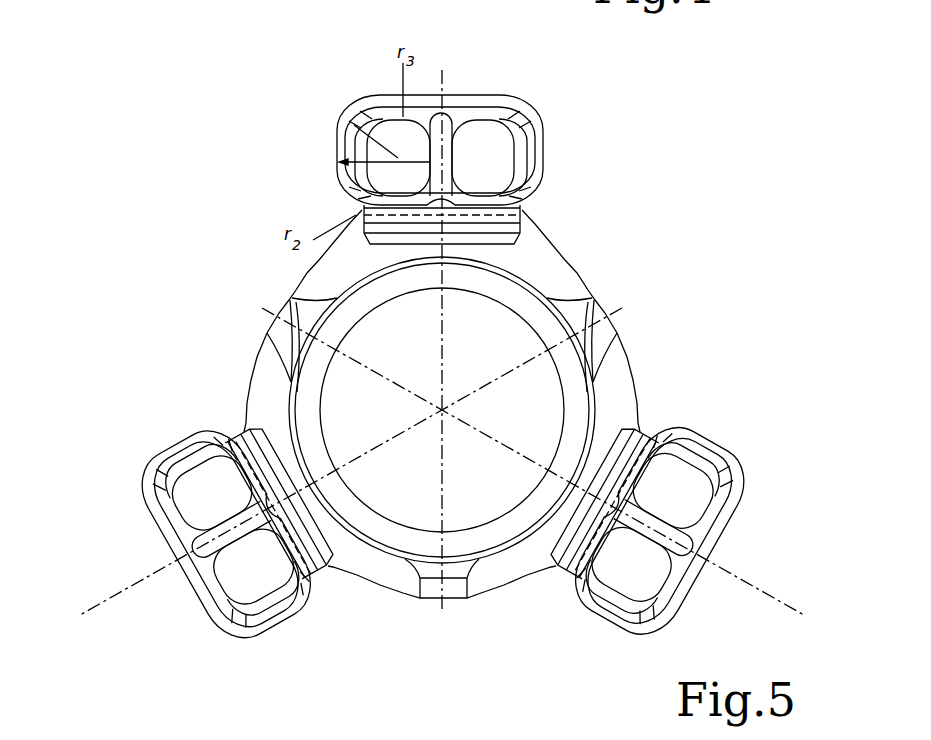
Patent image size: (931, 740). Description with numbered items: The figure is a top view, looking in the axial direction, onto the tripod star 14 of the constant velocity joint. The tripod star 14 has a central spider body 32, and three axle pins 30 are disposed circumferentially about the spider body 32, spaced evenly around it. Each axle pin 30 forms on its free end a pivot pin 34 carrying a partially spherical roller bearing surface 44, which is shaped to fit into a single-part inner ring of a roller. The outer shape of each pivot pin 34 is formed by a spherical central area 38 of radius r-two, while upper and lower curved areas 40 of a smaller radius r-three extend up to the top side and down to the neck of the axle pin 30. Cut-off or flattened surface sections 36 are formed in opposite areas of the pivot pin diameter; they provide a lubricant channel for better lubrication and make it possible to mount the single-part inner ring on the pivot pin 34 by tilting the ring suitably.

The tripod star 14 is at (615, 237).
The axle pin 30 is at (487, 90).
The spider body 32 is at (292, 295).
The pivot pin 34 is at (447, 93).
The flattened surface section 36 is at (487, 147).
The spherical central area 38 is at (543, 157).
The curved area 40 is at (357, 125).
The partially spherical roller bearing surface 44 is at (168, 444).